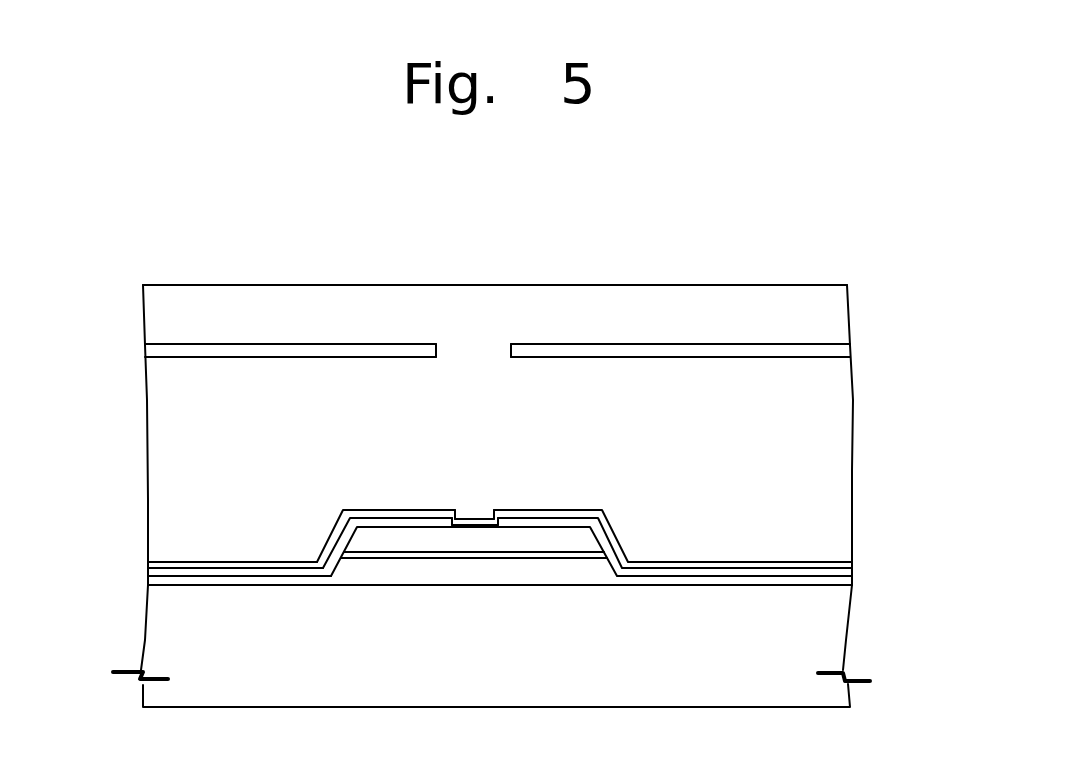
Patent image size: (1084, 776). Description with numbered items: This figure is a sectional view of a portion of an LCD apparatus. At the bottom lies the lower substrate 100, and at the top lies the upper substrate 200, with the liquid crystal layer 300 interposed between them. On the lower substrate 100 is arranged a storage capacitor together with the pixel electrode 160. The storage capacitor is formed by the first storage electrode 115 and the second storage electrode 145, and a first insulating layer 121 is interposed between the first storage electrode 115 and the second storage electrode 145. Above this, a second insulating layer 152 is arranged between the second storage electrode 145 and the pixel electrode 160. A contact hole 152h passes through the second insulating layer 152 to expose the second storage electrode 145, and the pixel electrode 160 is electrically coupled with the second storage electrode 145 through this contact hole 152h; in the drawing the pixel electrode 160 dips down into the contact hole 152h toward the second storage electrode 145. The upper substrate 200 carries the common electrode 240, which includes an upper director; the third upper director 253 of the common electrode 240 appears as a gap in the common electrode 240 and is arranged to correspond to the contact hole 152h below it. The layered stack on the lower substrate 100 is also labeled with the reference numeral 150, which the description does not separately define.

The lower substrate 100 is at (838, 646).
The first storage electrode 115 is at (490, 588).
The first insulating layer 121 is at (852, 585).
The second storage electrode 145 is at (418, 548).
The insulating layer stack 150 is at (148, 574).
The second insulating layer 152 is at (852, 570).
The contact hole 152h is at (463, 517).
The pixel electrode 160 is at (852, 562).
The upper substrate 200 is at (835, 313).
The common electrode 240 is at (150, 352).
The third upper director 253 is at (479, 357).
The liquid crystal layer 300 is at (835, 462).